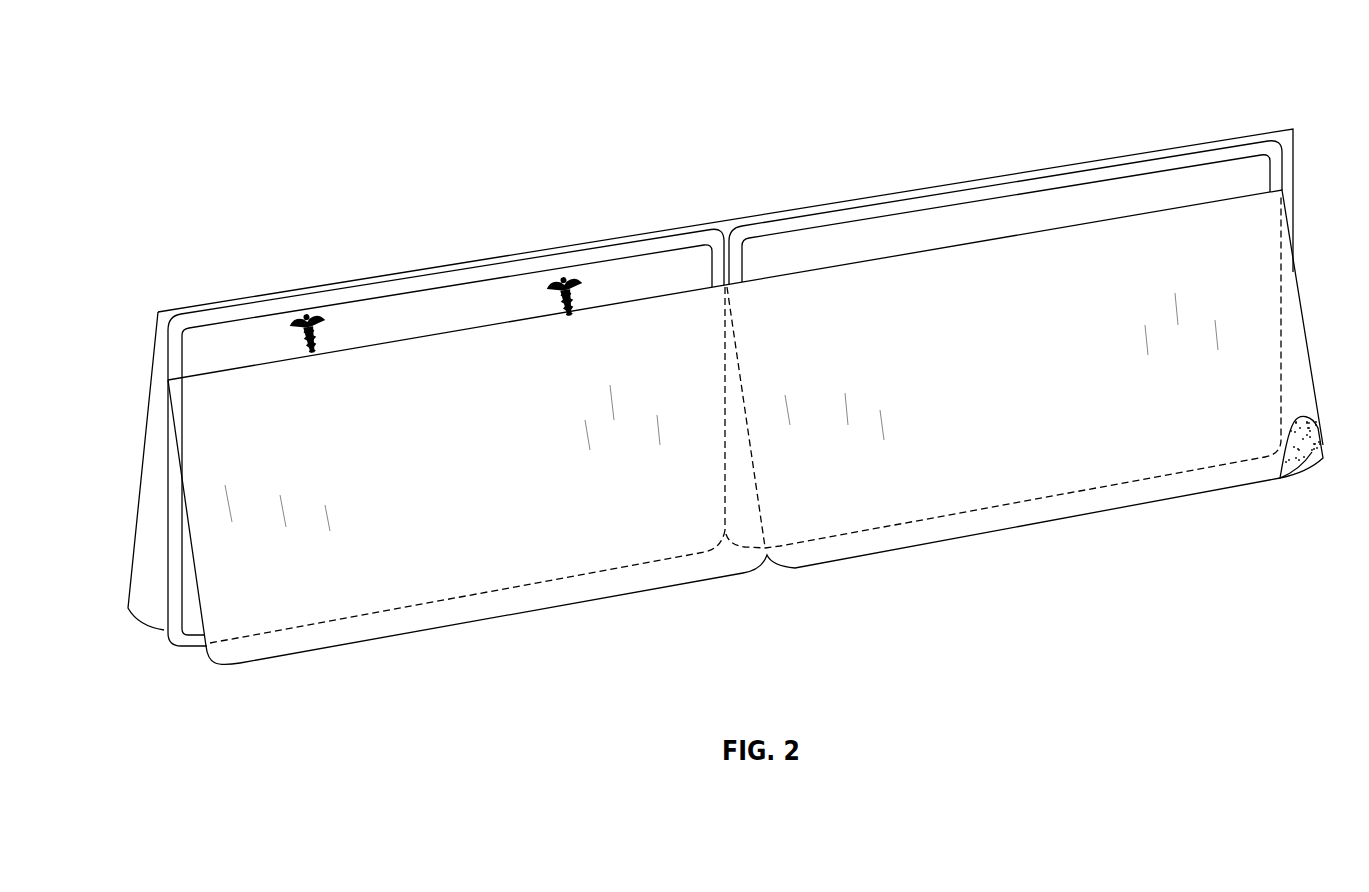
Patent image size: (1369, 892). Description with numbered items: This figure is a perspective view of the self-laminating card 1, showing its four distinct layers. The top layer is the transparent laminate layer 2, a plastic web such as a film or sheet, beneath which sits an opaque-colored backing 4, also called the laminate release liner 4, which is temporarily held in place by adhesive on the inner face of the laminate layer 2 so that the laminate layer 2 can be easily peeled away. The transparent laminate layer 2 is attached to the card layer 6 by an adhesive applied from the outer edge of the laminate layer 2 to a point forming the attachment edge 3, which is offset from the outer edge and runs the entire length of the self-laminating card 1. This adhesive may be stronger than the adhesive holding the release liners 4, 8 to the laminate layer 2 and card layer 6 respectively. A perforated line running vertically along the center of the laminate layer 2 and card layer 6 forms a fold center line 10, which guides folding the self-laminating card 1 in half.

The self-laminating card 1 is at (717, 366).
The transparent laminate layer 2 is at (1305, 450).
The attachment edge 3 is at (288, 373).
The opaque-colored backing 4 is at (1305, 488).
The card layer 6 is at (185, 578).
The release liner 8 is at (125, 554).
The fold center line 10 is at (720, 460).